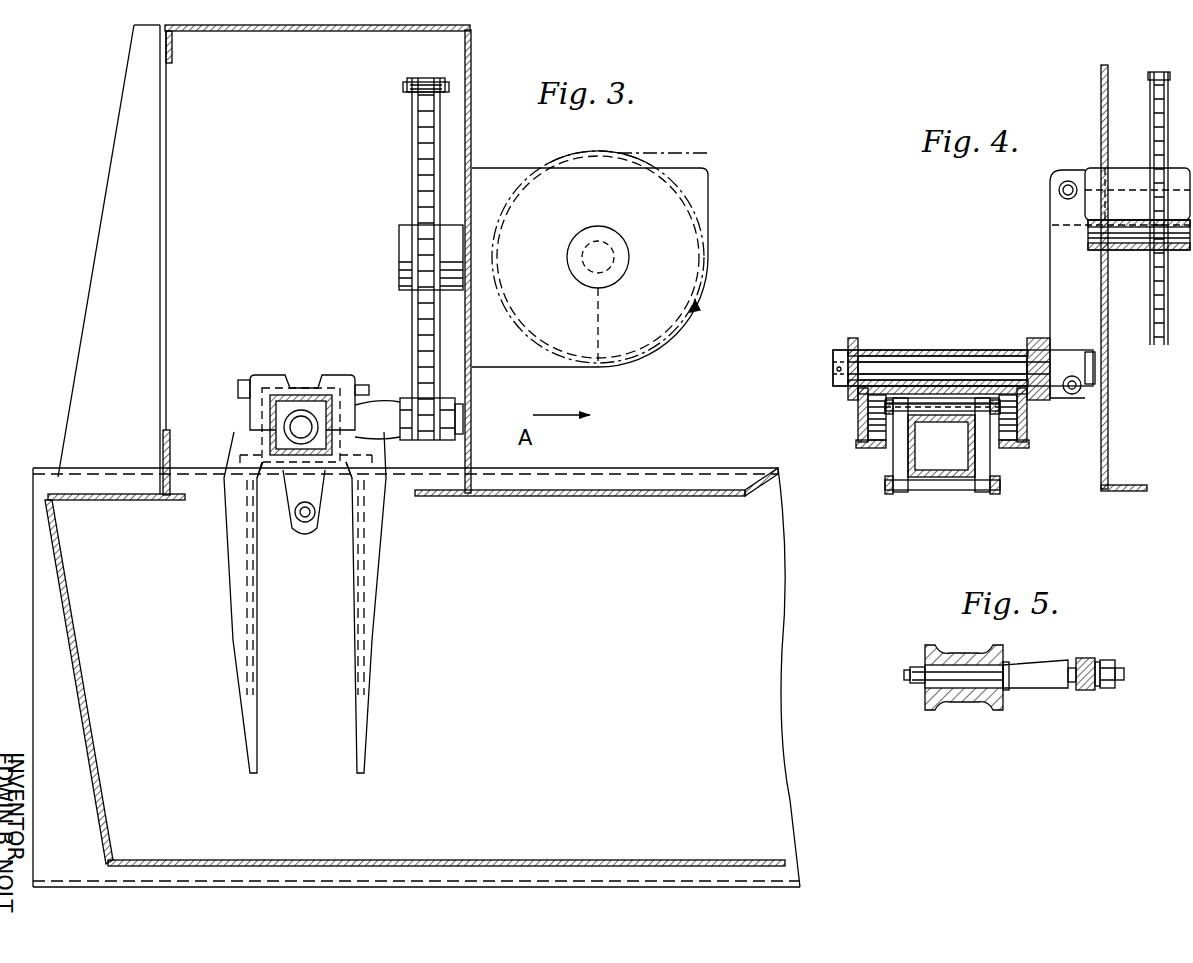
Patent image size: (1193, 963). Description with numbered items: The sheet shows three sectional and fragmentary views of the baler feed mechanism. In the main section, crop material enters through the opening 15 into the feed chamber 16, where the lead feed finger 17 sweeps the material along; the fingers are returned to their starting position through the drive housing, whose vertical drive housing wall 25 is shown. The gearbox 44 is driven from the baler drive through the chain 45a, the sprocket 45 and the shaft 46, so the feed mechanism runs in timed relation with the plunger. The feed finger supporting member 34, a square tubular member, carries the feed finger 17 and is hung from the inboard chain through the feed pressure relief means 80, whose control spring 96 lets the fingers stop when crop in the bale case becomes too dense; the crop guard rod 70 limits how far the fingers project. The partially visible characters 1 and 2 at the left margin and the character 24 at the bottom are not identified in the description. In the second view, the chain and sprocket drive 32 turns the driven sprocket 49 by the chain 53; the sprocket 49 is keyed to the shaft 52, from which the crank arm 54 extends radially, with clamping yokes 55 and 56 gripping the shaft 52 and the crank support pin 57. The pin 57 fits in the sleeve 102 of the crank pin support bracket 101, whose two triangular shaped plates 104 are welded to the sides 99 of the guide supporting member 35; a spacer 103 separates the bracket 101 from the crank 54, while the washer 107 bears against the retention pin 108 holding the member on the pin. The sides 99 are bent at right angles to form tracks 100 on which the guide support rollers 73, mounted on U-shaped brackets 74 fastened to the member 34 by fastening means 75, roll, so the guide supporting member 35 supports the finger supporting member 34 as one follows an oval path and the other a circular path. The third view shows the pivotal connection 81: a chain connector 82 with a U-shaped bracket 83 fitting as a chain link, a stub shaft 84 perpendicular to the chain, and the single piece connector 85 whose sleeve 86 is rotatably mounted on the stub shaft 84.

In FIG. 3, the machine frame 1 is at (33, 626).
In FIG. 3, the frame side 2 is at (50, 556).
In FIG. 3, the opening 15 is at (752, 622).
In FIG. 3, the feed chamber 16 is at (148, 697).
In FIG. 3, the feed finger 17 is at (383, 572).
In FIG. 3, the bottom wall 24 is at (366, 862).
In FIG. 3, the drive housing wall 25 is at (471, 78).
In FIG. 4, the chain and sprocket drive 32 is at (1128, 64).
In FIG. 3, the feed finger supporting member 34 is at (300, 385).
In FIG. 4, the feed finger supporting member 34 is at (945, 492).
In FIG. 4, the guide supporting member 35 is at (1030, 428).
In FIG. 3, the gearbox 44 is at (712, 197).
In FIG. 3, the sprocket 45 is at (630, 147).
In FIG. 3, the chain 45a is at (700, 152).
In FIG. 3, the shaft 46 is at (600, 372).
In FIG. 4, the driven sprocket 49 is at (1148, 300).
In FIG. 4, the shaft 52 is at (1137, 194).
In FIG. 4, the chain 53 is at (1095, 362).
In FIG. 4, the crank arm 54 is at (1052, 258).
In FIG. 4, the clamping yoke 55 is at (1050, 210).
In FIG. 4, the clamping yoke 56 is at (1084, 386).
In FIG. 4, the crank support pin 57 is at (833, 365).
In FIG. 3, the crop guard rod 70 is at (305, 530).
In FIG. 4, the guide support rollers 73 is at (858, 430).
In FIG. 4, the U-shaped brackets 74 is at (898, 455).
In FIG. 4, the fastening means 75 is at (940, 403).
In FIG. 3, the feed pressure relief means 80 is at (268, 421).
In FIG. 5, the pivotal connection 81 is at (892, 712).
In FIG. 5, the chain connector 82 is at (1033, 702).
In FIG. 5, the U-shaped bracket 83 is at (1100, 660).
In FIG. 5, the stub shaft 84 is at (1052, 690).
In FIG. 5, the single piece connector 85 is at (953, 717).
In FIG. 5, the sleeve 86 is at (1006, 662).
In FIG. 3, the control spring 96 is at (330, 410).
In FIG. 4, the sides 99 is at (860, 437).
In FIG. 4, the tracks 100 is at (868, 448).
In FIG. 4, the crank pin support bracket 101 is at (858, 332).
In FIG. 4, the sleeve 102 is at (898, 350).
In FIG. 4, the spacer 103 is at (1040, 345).
In FIG. 4, the triangular shaped plates 104 is at (858, 390).
In FIG. 4, the washer 107 is at (850, 345).
In FIG. 4, the retention pin 108 is at (830, 361).